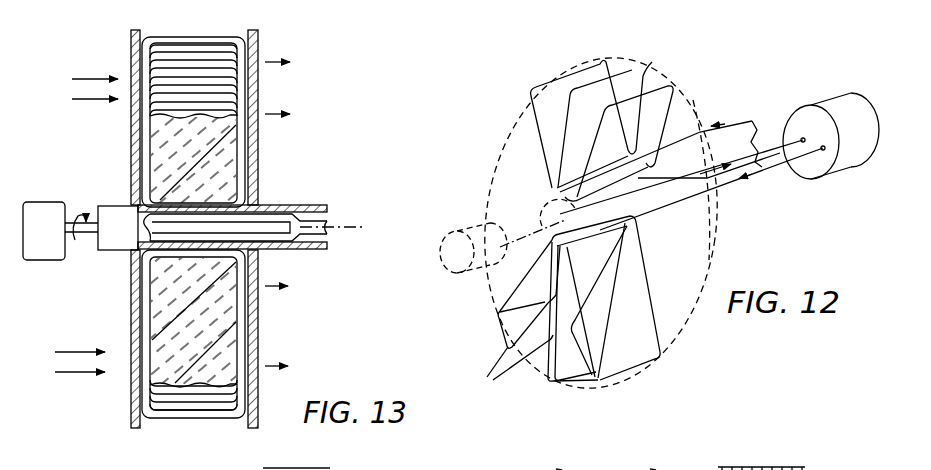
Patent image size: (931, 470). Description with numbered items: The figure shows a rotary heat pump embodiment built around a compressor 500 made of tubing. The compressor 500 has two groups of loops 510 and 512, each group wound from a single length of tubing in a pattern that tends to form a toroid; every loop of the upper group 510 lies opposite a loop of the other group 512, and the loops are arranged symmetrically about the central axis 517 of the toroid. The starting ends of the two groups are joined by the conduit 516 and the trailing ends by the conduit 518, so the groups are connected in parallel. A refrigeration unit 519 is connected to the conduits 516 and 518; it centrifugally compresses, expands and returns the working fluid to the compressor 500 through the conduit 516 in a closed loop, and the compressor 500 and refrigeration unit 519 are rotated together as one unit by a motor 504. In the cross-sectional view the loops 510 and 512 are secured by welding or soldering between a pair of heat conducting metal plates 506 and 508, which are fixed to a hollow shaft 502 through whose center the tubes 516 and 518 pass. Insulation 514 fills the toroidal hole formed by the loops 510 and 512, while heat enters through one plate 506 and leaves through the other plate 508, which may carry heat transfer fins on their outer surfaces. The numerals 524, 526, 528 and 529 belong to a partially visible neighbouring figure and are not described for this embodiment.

In FIG. 13, the compressor 500 is at (276, 33).
In FIG. 12, the compressor 500 is at (696, 331).
In FIG. 13, the hollow shaft 502 is at (303, 206).
In FIG. 13, the motor 504 is at (70, 180).
In FIG. 12, the motor 504 is at (456, 273).
In FIG. 13, the heat conducting metal plate 506 is at (131, 42).
In FIG. 12, the heat conducting metal plate 506 is at (511, 116).
In FIG. 13, the heat conducting metal plate 508 is at (258, 135).
In FIG. 12, the heat conducting metal plate 508 is at (708, 248).
In FIG. 13, the group of loops 510 is at (170, 40).
In FIG. 12, the group of loops 510 is at (603, 62).
In FIG. 13, the group of loops 512 is at (165, 418).
In FIG. 12, the group of loops 512 is at (494, 368).
In FIG. 13, the insulation 514 is at (165, 138).
In FIG. 13, the conduit 516 is at (279, 243).
In FIG. 12, the conduit 516 is at (798, 157).
In FIG. 12, the central axis 517 is at (523, 228).
In FIG. 13, the conduit 518 is at (272, 214).
In FIG. 12, the conduit 518 is at (745, 148).
In FIG. 12, the refrigeration unit 519 is at (838, 100).
In FIG. 13, the plate 524 is at (780, 468).
In FIG. 13, the plate 526 is at (562, 469).
In FIG. 13, the plate 528 is at (335, 469).
In FIG. 13, the plate 529 is at (655, 469).